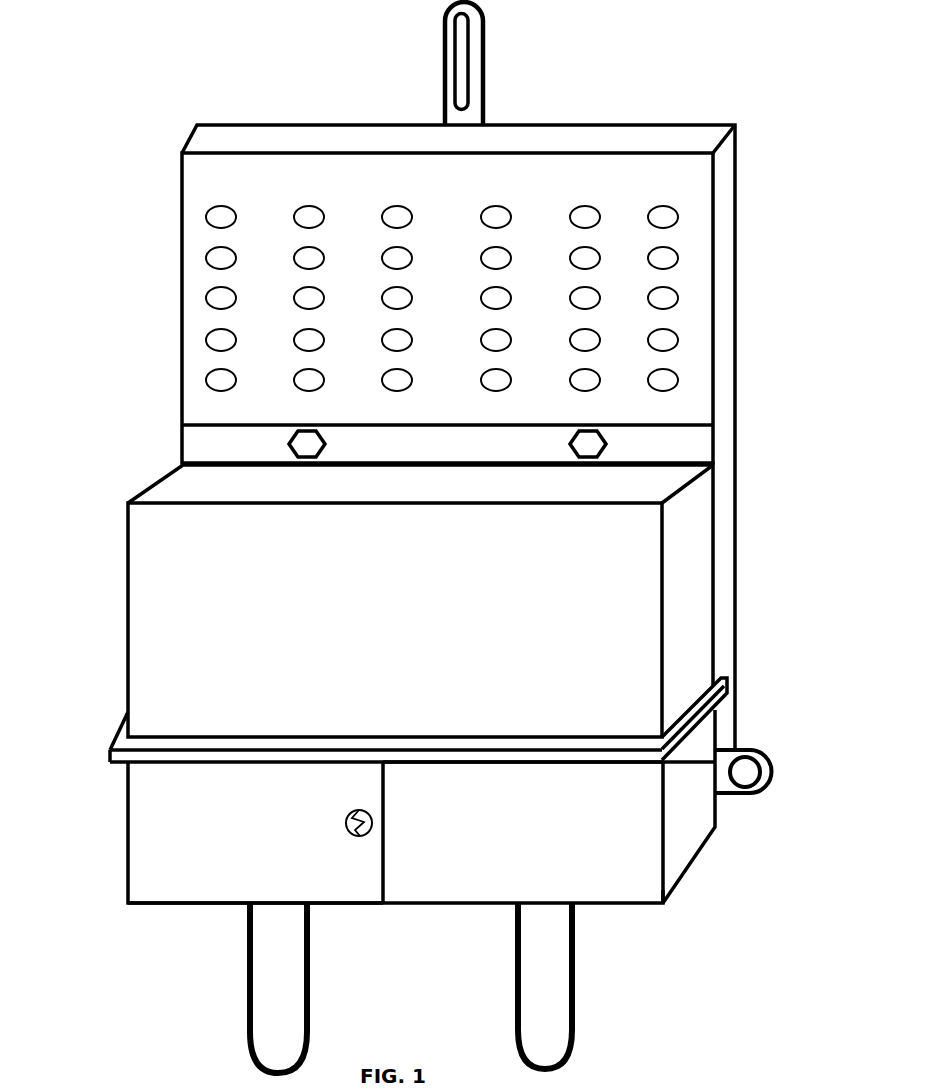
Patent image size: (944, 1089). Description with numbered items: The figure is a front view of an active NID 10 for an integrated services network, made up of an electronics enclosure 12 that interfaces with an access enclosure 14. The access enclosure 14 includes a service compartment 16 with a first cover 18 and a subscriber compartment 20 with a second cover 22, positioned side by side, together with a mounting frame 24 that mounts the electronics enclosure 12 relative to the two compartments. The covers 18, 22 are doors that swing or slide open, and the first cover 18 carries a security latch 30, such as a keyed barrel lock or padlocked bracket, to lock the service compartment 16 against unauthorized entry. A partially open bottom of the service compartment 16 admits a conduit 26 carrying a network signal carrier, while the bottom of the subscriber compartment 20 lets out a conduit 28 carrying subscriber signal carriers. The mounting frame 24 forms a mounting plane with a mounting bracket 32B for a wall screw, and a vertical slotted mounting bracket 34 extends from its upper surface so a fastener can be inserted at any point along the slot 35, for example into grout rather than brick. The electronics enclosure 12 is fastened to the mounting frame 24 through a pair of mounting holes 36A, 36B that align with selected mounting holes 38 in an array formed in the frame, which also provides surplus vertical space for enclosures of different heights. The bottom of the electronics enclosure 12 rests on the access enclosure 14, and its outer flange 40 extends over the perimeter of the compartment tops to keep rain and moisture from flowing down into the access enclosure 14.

The active NID 10 is at (92, 48).
The electronics enclosure 12 is at (120, 492).
The access enclosure 14 is at (413, 950).
The service compartment 16 is at (118, 915).
The first cover 18 is at (145, 835).
The subscriber compartment 20 is at (678, 908).
The second cover 22 is at (635, 848).
The mounting frame 24 is at (172, 272).
The conduit 26 is at (255, 1025).
The conduit 28 is at (565, 1025).
The security latch 30 is at (362, 836).
The mounting bracket 32B is at (772, 772).
The vertical slotted mounting bracket 34 is at (445, 45).
The slot 35 is at (460, 70).
The mounting hole 36A is at (289, 444).
The mounting hole 36B is at (606, 440).
The mounting holes 38 is at (675, 212).
The outer flange 40 is at (110, 752).